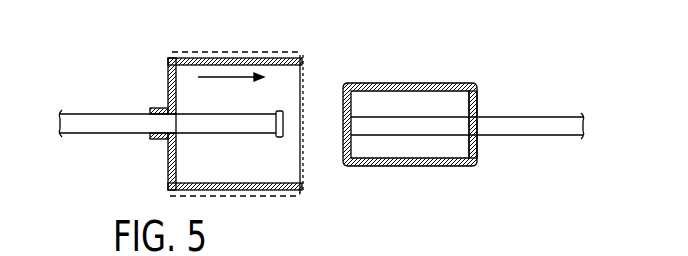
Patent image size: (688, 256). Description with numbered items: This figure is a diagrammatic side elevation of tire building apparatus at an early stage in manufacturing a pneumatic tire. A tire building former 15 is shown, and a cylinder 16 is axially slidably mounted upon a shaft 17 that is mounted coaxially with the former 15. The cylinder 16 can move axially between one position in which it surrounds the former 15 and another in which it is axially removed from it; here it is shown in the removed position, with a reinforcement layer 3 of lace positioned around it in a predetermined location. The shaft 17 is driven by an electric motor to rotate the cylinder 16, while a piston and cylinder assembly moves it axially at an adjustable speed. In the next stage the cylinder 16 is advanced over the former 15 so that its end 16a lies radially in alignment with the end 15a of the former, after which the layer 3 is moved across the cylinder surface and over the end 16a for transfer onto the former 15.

The reinforcement layer 3 is at (210, 52).
The cylinder 16 is at (170, 80).
The end of the cylinder 16a is at (304, 95).
The shaft 17 is at (109, 114).
The tire building former 15 is at (422, 84).
The end of the former 15a is at (478, 92).